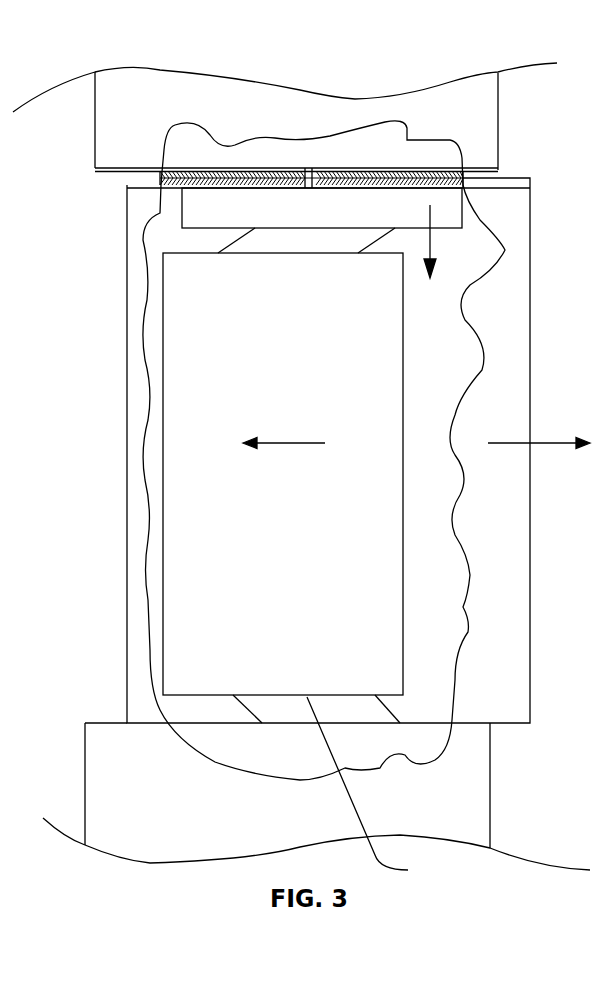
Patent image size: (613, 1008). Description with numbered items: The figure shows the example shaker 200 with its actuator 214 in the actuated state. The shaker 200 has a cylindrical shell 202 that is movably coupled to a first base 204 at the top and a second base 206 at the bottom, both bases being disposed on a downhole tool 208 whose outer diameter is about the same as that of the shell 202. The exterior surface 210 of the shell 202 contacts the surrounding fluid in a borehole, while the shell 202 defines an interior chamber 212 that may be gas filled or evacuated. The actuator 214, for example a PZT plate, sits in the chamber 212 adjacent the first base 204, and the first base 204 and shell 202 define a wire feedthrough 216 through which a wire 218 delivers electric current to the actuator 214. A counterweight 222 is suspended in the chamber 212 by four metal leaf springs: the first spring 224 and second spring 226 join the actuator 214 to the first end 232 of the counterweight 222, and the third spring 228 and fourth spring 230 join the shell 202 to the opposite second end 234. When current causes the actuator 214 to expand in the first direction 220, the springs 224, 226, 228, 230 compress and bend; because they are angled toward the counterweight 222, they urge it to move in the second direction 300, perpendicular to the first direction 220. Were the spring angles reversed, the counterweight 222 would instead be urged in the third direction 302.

The shaker 200 is at (100, 200).
The shell 202 is at (127, 318).
The first base 204 is at (473, 170).
The second base 206 is at (110, 723).
The downhole tool 208 is at (95, 127).
The exterior surface 210 is at (488, 543).
The chamber 212 is at (440, 627).
The actuator 214 is at (447, 229).
The wire feedthrough 216 is at (308, 170).
The wire 218 is at (330, 152).
The first direction 220 is at (432, 250).
The counterweight 222 is at (242, 343).
The first spring 224 is at (233, 243).
The second spring 226 is at (373, 241).
The third spring 228 is at (243, 707).
The fourth spring 230 is at (392, 711).
The first end 232 is at (290, 265).
The second end 234 is at (374, 789).
The second direction 300 is at (288, 443).
The third direction 302 is at (538, 443).